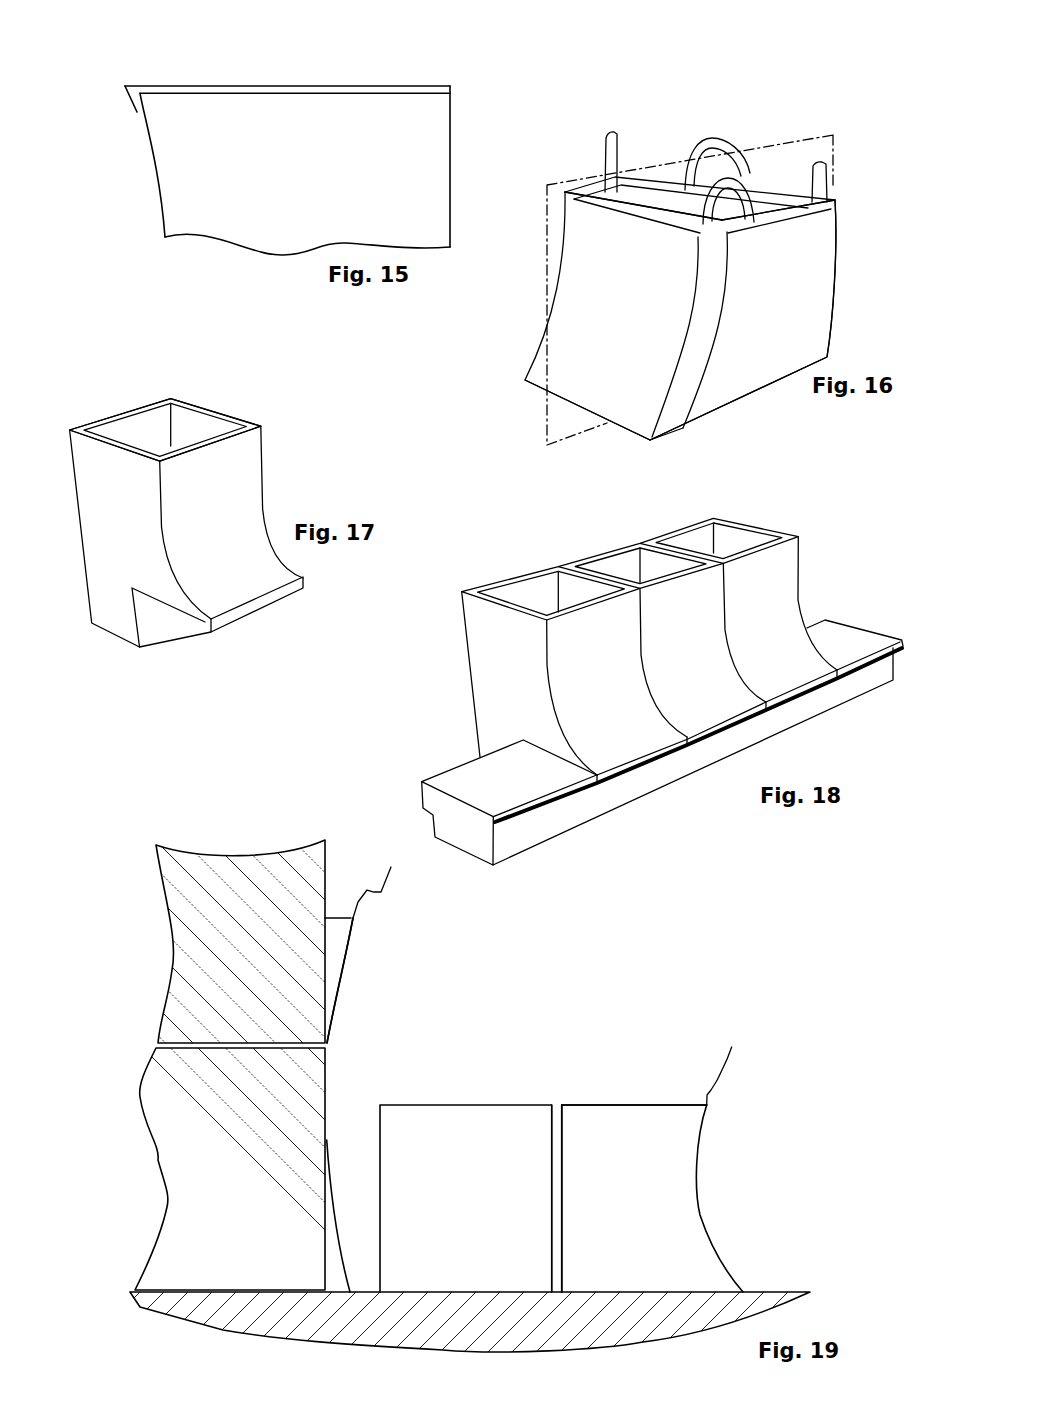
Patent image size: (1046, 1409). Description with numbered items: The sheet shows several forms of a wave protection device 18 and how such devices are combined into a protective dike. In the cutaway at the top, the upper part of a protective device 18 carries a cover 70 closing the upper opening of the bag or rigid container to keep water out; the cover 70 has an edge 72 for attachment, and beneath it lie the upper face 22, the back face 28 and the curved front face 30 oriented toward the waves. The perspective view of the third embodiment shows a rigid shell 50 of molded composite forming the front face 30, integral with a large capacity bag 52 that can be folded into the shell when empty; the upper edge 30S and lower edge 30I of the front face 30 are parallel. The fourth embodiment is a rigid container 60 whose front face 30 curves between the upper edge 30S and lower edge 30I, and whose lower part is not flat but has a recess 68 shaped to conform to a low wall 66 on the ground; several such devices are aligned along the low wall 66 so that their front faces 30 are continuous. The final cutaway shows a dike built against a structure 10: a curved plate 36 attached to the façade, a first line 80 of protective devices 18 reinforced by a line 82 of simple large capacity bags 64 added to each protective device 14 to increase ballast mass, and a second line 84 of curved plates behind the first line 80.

In FIG. 19, the structure 10 is at (188, 945).
In FIG. 18, the protective device 14 is at (662, 660).
In FIG. 19, the protective device 14 is at (543, 1102).
In FIG. 15, the protective device 18 is at (281, 137).
In FIG. 16, the protective device 18 is at (697, 246).
In FIG. 17, the protective device 18 is at (234, 502).
In FIG. 18, the protective device 18 is at (671, 518).
In FIG. 19, the protective device 18 is at (633, 1088).
In FIG. 15, the upper face 22 is at (281, 137).
In FIG. 15, the back face 28 is at (452, 147).
In FIG. 15, the front face 30 is at (160, 182).
In FIG. 16, the front face 30 is at (664, 270).
In FIG. 17, the front face 30 is at (234, 502).
In FIG. 19, the front face 30 is at (474, 1122).
In FIG. 16, the upper edge 30S is at (637, 215).
In FIG. 17, the upper edge 30S is at (211, 437).
In FIG. 19, the upper edge 30S is at (551, 976).
In FIG. 16, the lower edge 30I is at (570, 403).
In FIG. 17, the lower edge 30I is at (285, 603).
In FIG. 19, the lower edge 30I is at (743, 1291).
In FIG. 19, the plate 36 is at (342, 998).
In FIG. 16, the rigid shell 50 is at (700, 332).
In FIG. 16, the large capacity bag 52 is at (815, 237).
In FIG. 17, the rigid container 60 is at (117, 411).
In FIG. 19, the large capacity bag 64 is at (443, 1128).
In FIG. 18, the low wall 66 is at (523, 782).
In FIG. 17, the recess 68 is at (167, 623).
In FIG. 15, the cover 70 is at (273, 86).
In FIG. 15, the edge 72 is at (128, 97).
In FIG. 19, the first line 80 is at (663, 1085).
In FIG. 19, the line 82 is at (520, 1083).
In FIG. 19, the second line 84 is at (376, 974).